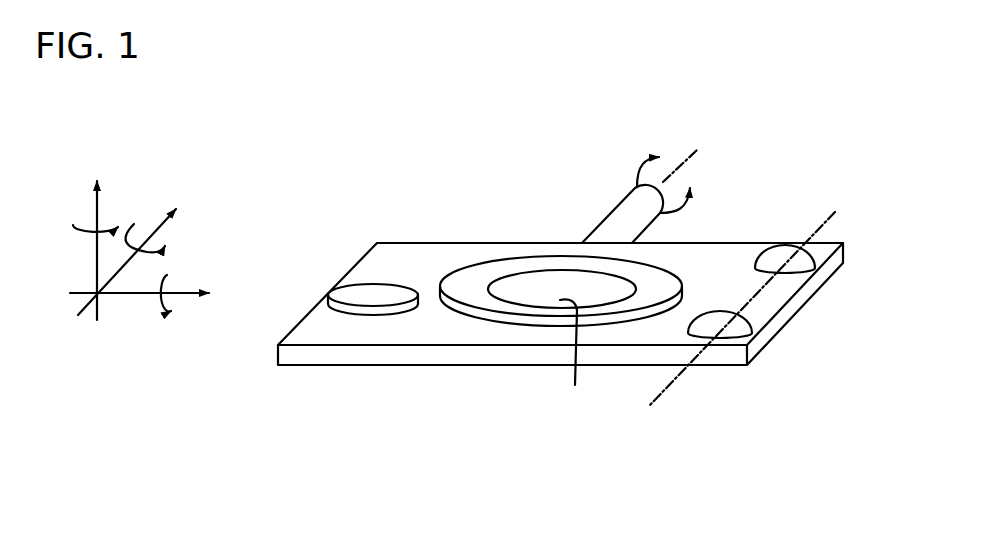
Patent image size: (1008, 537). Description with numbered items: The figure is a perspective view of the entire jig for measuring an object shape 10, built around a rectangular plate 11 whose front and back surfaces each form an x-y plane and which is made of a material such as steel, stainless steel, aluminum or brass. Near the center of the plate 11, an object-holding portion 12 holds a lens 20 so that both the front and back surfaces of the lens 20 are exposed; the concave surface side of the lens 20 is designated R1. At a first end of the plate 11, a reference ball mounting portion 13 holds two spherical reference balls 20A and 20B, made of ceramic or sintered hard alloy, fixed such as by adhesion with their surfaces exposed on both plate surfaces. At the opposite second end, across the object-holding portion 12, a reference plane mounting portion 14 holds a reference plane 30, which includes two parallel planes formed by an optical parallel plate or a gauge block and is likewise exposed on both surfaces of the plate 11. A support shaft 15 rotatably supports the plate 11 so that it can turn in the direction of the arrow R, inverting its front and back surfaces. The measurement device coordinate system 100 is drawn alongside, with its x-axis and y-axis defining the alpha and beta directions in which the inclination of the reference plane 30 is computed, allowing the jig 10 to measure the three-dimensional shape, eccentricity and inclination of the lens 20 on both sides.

The jig for measuring an object shape 10 is at (474, 189).
The rectangular plate 11 is at (418, 253).
The object-holding portion 12 is at (510, 334).
The reference ball mounting portion 13 is at (823, 253).
The reference plane mounting portion 14 is at (367, 328).
The support shaft 15 is at (617, 217).
The lens 20 is at (552, 269).
The spherical reference ball 20A is at (713, 312).
The spherical reference ball 20B is at (780, 244).
The reference plane 30 is at (363, 282).
The rotation direction arrow R is at (663, 167).
The concave surface side of lens R1 is at (574, 358).
The measurement device coordinate system 100 is at (141, 257).